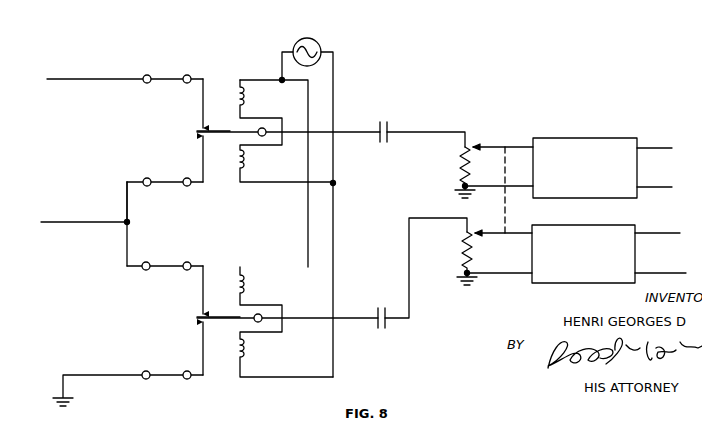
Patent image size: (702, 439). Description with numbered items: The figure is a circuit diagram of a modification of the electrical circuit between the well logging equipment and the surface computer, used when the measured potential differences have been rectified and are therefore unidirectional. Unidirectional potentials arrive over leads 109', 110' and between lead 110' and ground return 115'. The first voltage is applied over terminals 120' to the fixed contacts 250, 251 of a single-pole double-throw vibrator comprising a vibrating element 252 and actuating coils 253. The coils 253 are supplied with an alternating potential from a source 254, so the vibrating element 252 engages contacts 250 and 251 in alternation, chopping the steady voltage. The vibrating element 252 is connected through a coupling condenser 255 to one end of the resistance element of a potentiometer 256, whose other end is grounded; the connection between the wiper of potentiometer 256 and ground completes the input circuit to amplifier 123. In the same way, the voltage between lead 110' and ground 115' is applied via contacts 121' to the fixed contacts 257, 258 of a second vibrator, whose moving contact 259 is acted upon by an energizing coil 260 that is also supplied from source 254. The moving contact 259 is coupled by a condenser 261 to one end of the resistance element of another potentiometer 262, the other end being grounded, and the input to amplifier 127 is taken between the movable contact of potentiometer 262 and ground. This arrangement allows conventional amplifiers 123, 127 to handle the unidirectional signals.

The lead 109' is at (125, 66).
The lead 110' is at (85, 203).
The ground return 115' is at (115, 389).
The terminals 120' is at (153, 130).
The contacts 121' is at (152, 320).
The amplifier 123 is at (612, 138).
The amplifier 127 is at (568, 225).
The fixed contact 250 is at (202, 122).
The fixed contact 251 is at (202, 170).
The vibrating element 252 is at (228, 130).
The actuating coils 253 is at (249, 97).
The source 254 is at (318, 46).
The coupling condenser 255 is at (388, 128).
The potentiometer 256 is at (461, 165).
The fixed contact 257 is at (202, 290).
The fixed contact 258 is at (202, 343).
The moving contact 259 is at (197, 319).
The energizing coil 260 is at (248, 288).
The condenser 261 is at (388, 324).
The potentiometer 262 is at (465, 256).